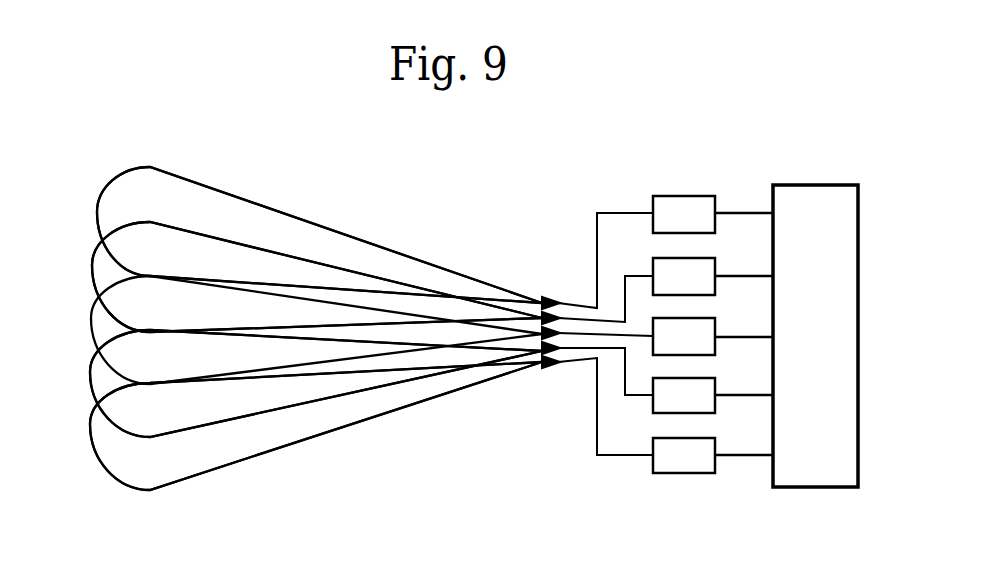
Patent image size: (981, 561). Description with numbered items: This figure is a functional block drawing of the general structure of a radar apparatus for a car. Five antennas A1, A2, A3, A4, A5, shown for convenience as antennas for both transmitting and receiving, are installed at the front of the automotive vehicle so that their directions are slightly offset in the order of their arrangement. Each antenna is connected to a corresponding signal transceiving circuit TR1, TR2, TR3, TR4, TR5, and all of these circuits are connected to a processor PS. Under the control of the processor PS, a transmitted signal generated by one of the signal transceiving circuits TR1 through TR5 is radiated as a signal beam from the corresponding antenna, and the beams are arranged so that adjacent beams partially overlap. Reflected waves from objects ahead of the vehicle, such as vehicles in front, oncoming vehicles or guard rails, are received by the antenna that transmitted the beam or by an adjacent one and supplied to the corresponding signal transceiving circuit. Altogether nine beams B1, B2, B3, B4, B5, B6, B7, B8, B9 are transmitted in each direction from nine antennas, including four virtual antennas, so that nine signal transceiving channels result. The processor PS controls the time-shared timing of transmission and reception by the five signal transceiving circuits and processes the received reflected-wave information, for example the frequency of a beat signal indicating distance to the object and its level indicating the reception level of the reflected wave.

The beam B1 is at (135, 477).
The beam B2 is at (104, 448).
The beam B3 is at (104, 396).
The beam B4 is at (106, 372).
The beam B5 is at (108, 328).
The beam B6 is at (130, 300).
The beam B7 is at (110, 266).
The beam B8 is at (108, 212).
The beam B9 is at (142, 172).
The antenna A1 is at (545, 377).
The antenna A2 is at (560, 364).
The antenna A3 is at (530, 370).
The antenna A4 is at (538, 300).
The antenna A5 is at (555, 297).
The signal transceiving circuit TR1 is at (713, 456).
The signal transceiving circuit TR2 is at (713, 396).
The signal transceiving circuit TR3 is at (713, 336).
The signal transceiving circuit TR4 is at (713, 276).
The signal transceiving circuit TR5 is at (713, 214).
The processor PS is at (815, 336).